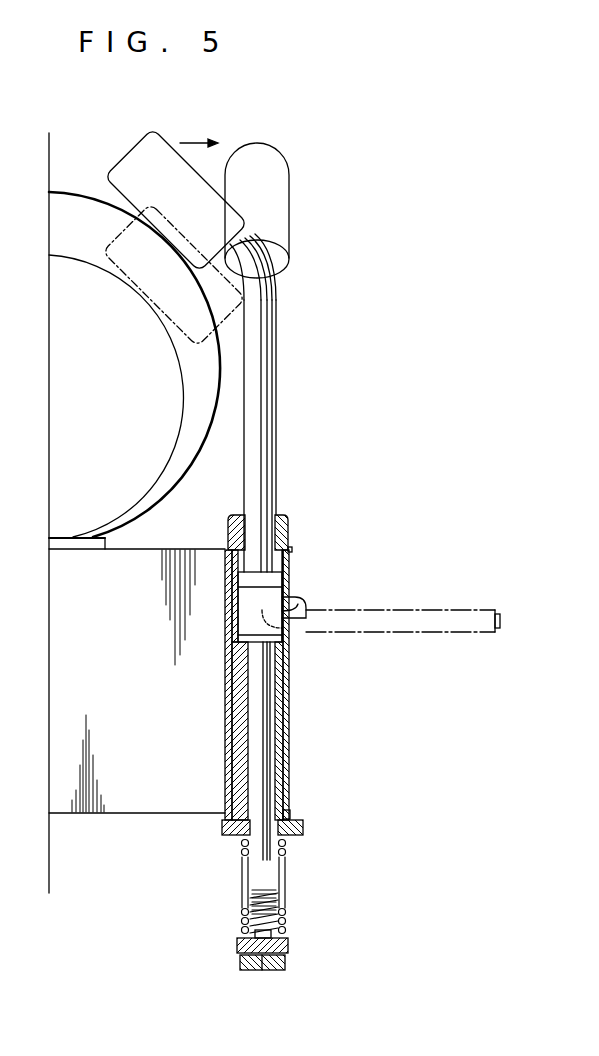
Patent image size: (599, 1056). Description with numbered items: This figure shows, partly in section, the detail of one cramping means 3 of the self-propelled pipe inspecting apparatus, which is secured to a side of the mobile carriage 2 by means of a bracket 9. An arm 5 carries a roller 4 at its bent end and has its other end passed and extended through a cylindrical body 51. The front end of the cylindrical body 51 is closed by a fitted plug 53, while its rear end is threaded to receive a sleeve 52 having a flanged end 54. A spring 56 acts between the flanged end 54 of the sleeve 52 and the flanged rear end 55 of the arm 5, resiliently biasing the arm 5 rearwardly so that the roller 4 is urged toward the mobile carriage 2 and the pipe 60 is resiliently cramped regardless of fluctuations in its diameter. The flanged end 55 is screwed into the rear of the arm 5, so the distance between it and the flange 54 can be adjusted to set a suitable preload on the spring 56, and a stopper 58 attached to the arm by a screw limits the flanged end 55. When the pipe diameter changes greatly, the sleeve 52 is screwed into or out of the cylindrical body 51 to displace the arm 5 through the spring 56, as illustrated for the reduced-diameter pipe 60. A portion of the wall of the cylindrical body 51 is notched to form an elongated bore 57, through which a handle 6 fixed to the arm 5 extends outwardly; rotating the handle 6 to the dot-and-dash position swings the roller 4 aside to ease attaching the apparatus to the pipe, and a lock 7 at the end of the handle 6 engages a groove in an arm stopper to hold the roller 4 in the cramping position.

The mobile carriage 2 is at (60, 637).
The cramping means 3 is at (360, 735).
The roller 4 is at (135, 145).
The arm 5 is at (274, 423).
The handle 6 is at (305, 602).
The lock 7 is at (500, 621).
The bracket 9 is at (232, 760).
The cylindrical body 51 is at (283, 742).
The sleeve 52 is at (286, 793).
The plug 53 is at (303, 502).
The flanged end 54 is at (290, 837).
The flanged rear end 55 is at (290, 946).
The spring 56 is at (240, 912).
The elongated bore 57 is at (283, 680).
The stopper 58 is at (245, 962).
The pipe 60 is at (87, 260).